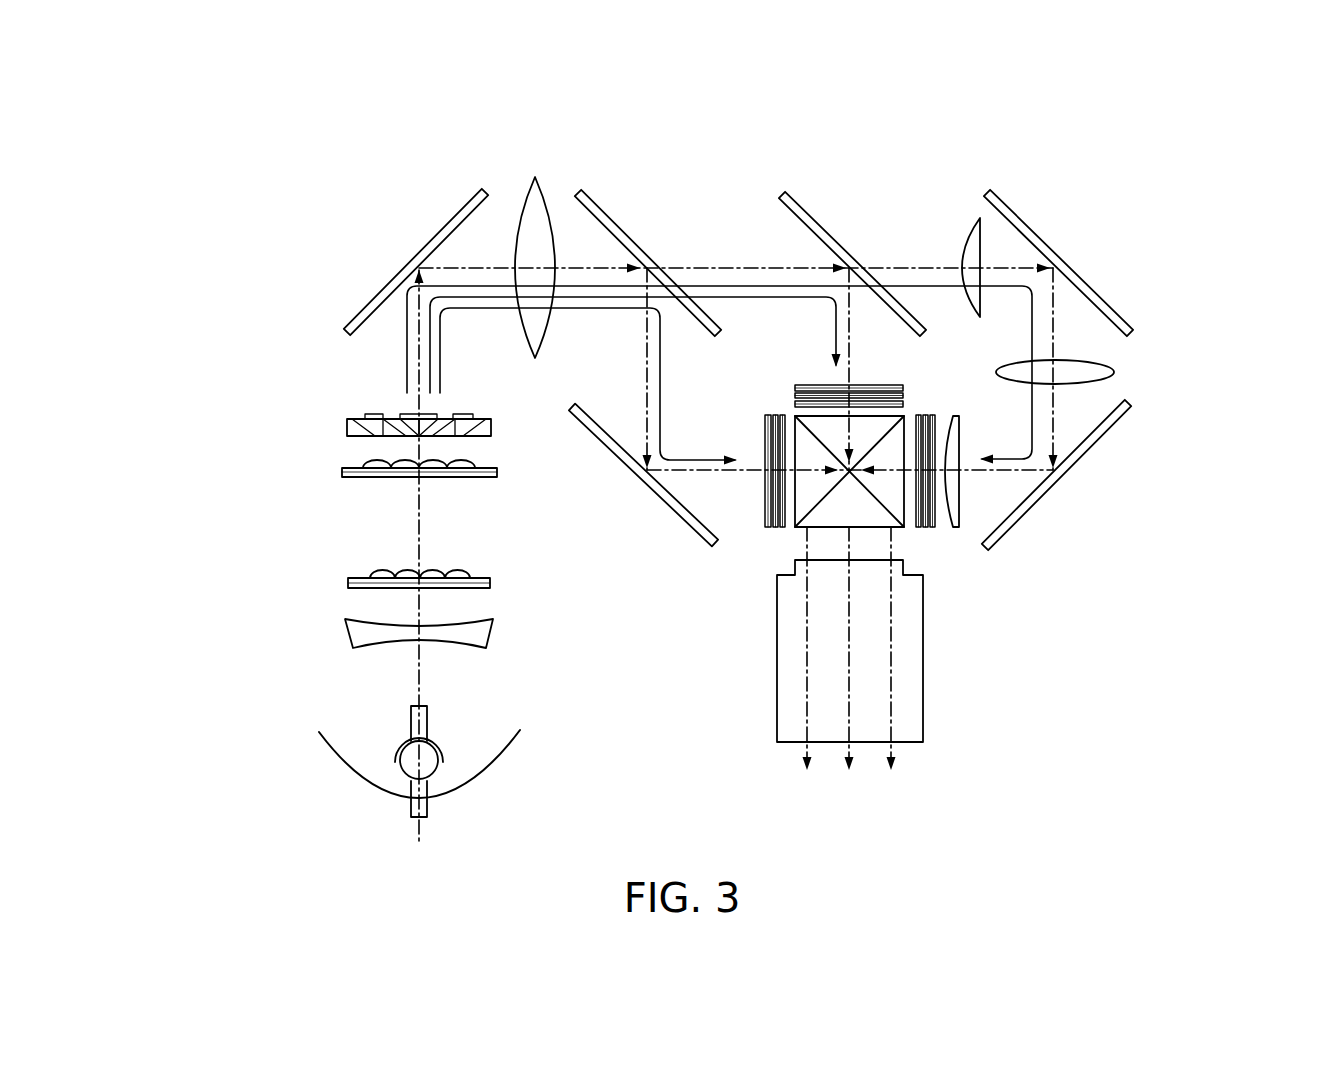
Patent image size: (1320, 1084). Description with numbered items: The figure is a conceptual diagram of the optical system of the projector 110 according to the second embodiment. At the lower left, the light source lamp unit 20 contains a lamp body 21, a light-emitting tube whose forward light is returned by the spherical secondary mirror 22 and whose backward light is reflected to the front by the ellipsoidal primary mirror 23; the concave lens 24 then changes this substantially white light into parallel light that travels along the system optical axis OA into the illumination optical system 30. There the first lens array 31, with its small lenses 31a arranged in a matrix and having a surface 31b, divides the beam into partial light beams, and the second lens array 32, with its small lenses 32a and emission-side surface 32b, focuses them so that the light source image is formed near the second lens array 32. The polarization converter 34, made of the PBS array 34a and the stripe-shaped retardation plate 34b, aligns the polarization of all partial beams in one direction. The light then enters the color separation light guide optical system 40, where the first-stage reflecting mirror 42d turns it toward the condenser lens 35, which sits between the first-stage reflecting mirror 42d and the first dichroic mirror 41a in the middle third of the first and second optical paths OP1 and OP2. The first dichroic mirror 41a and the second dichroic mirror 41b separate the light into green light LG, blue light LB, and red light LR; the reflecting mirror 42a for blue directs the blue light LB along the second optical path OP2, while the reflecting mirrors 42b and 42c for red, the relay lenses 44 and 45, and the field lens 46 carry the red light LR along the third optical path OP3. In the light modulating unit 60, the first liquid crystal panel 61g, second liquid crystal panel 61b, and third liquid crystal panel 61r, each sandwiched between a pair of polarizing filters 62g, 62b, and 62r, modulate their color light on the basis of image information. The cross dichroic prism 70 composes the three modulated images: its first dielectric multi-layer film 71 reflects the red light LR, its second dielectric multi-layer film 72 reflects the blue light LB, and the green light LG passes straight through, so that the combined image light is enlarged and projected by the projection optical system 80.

The projector 110 is at (1248, 100).
The light source lamp unit 20 is at (287, 712).
The lamp body 21 is at (410, 807).
The secondary mirror 22 is at (397, 747).
The primary mirror 23 is at (483, 778).
The concave lens 24 is at (492, 633).
The illumination optical system 30 is at (262, 505).
The first lens array 31 is at (411, 562).
The small lenses 31a is at (373, 575).
The substrate of first lens array 31b is at (467, 575).
The second lens array 32 is at (409, 451).
The small lenses 32a is at (367, 463).
The emission-side surface 32b is at (478, 460).
The polarization converter 34 is at (346, 388).
The PBS array 34a is at (347, 434).
The retardation plate 34b is at (377, 418).
The condenser lens 35 is at (527, 322).
The color separation light guide optical system 40 is at (1095, 257).
The first dichroic mirror 41a is at (620, 224).
The second dichroic mirror 41b is at (800, 206).
The reflecting mirror for blue 42a is at (605, 447).
The reflecting mirror for red 42b is at (1027, 222).
The reflecting mirror for red 42c is at (1083, 458).
The first-stage reflecting mirror 42d is at (398, 273).
The relay lens 44 is at (964, 245).
The relay lens 45 is at (1085, 386).
The field lens 46 is at (1003, 530).
The light modulating unit 60 is at (975, 608).
The second liquid crystal panel 61b is at (783, 497).
The first liquid crystal panel 61g is at (905, 395).
The third liquid crystal panel 61r is at (917, 505).
The polarizing filters 62b is at (777, 493).
The polarizing filters 62g is at (795, 402).
The polarizing filters 62r is at (930, 505).
The cross dichroic prism 70 is at (839, 569).
The first dielectric multi-layer film 71 is at (794, 530).
The second dielectric multi-layer film 72 is at (903, 513).
The projection optical system 80 is at (924, 688).
The system optical axis OA is at (417, 530).
The first optical path OP1 is at (834, 313).
The second optical path OP2 is at (662, 412).
The optical path of red light OP3 is at (1014, 306).
The blue light LB is at (697, 475).
The green light LG is at (855, 320).
The red light LR is at (1060, 315).